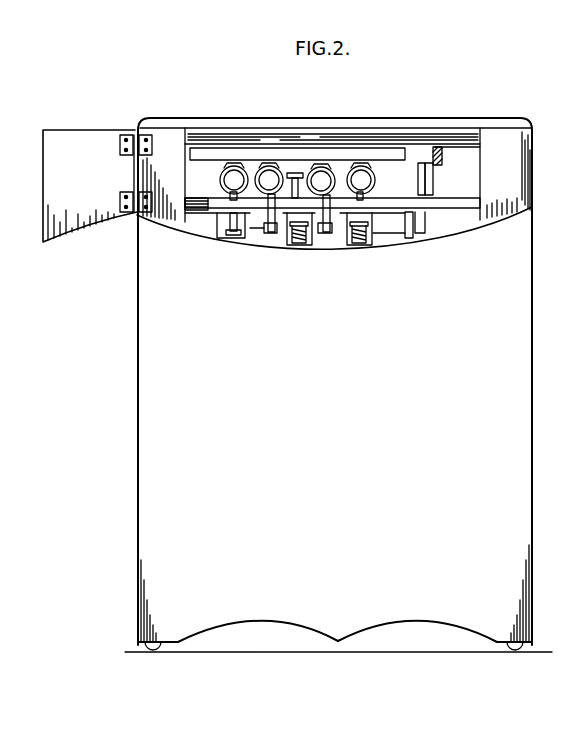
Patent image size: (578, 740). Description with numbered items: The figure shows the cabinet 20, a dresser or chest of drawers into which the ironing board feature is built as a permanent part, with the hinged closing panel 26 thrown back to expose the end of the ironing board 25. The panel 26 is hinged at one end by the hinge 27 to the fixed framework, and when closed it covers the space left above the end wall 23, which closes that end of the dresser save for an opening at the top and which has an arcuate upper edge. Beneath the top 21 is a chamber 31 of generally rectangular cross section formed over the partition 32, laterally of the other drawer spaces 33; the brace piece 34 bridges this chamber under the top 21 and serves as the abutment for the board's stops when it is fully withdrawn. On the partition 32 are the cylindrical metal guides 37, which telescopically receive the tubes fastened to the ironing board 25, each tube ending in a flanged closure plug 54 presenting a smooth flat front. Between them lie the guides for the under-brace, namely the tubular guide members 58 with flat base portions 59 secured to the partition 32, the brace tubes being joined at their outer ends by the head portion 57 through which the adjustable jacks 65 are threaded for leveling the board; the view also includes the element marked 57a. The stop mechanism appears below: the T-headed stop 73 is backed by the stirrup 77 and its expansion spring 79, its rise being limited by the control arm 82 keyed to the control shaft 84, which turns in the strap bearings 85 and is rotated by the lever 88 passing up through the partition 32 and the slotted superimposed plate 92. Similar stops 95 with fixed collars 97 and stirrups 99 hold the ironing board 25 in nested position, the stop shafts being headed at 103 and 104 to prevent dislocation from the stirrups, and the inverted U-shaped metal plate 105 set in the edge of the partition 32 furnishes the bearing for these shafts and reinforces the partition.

The cabinet 20 is at (338, 385).
The top 21 is at (457, 118).
The end wall 23 is at (265, 248).
The ironing board 25 is at (381, 155).
The closing panel 26 is at (74, 230).
The hinge 27 is at (135, 130).
The chamber 31 is at (401, 171).
The partition 32 is at (463, 210).
The drawer spaces 33 is at (492, 174).
The brace piece 34 is at (287, 133).
The cylindrical metal guide 37 is at (185, 170).
The flanged closure plug 54 is at (231, 179).
The head portion 57 is at (268, 173).
The valve 57a is at (312, 172).
The tubular guide member 58 is at (340, 168).
The flat base portion 59 is at (392, 222).
The adjustable jack 65 is at (266, 229).
The T-headed stop 73 is at (298, 171).
The stirrup 77 is at (279, 257).
The expansion spring 79 is at (295, 255).
The control arm 82 is at (281, 255).
The control shaft 84 is at (378, 232).
The bearing 85 is at (408, 238).
The lever 88 is at (437, 163).
The superimposed plate 92 is at (437, 195).
The stop 95 is at (358, 175).
The fixed collar 97 is at (237, 230).
The stirrup 99 is at (374, 236).
The head 103 is at (359, 253).
The head 104 is at (301, 255).
The inverted U-shaped metal plate 105 is at (212, 205).